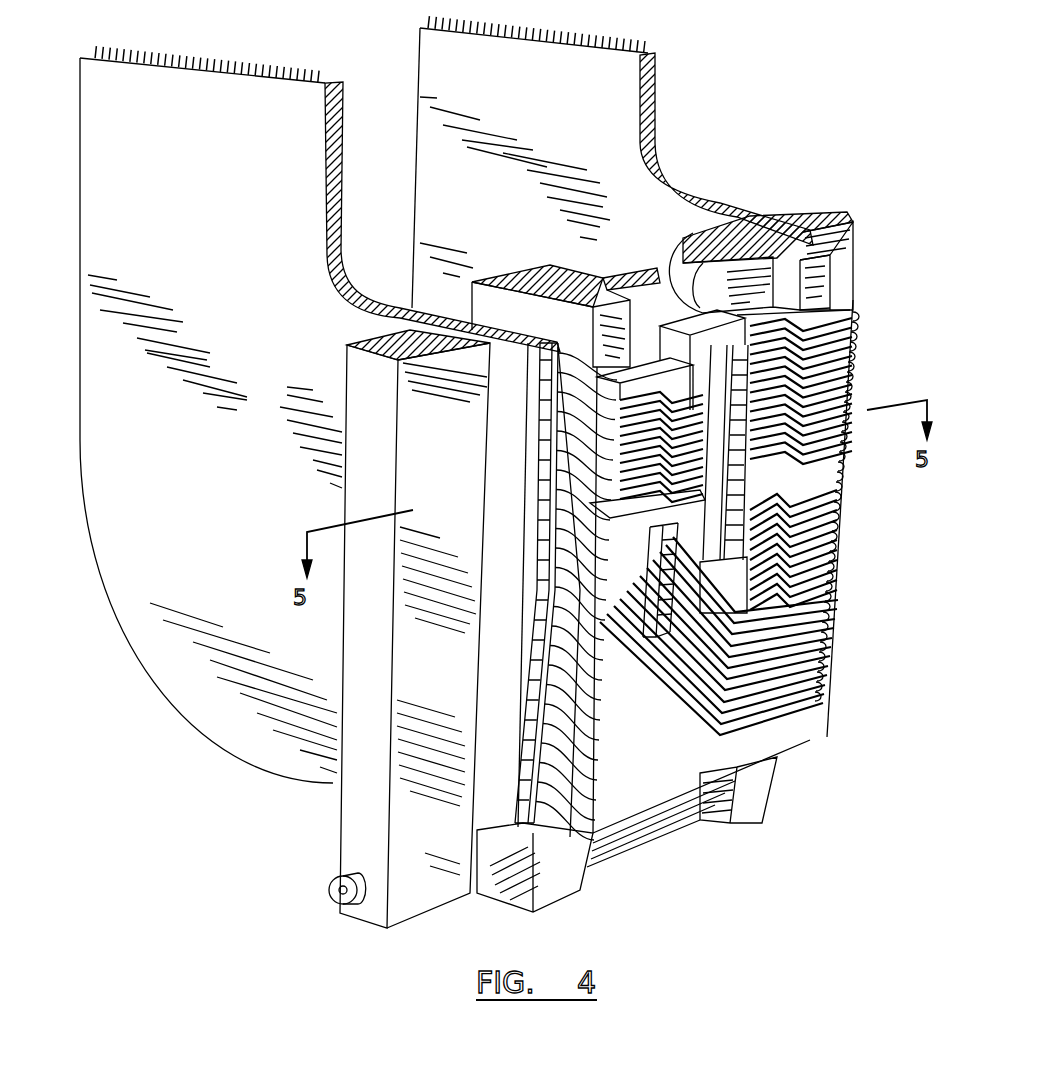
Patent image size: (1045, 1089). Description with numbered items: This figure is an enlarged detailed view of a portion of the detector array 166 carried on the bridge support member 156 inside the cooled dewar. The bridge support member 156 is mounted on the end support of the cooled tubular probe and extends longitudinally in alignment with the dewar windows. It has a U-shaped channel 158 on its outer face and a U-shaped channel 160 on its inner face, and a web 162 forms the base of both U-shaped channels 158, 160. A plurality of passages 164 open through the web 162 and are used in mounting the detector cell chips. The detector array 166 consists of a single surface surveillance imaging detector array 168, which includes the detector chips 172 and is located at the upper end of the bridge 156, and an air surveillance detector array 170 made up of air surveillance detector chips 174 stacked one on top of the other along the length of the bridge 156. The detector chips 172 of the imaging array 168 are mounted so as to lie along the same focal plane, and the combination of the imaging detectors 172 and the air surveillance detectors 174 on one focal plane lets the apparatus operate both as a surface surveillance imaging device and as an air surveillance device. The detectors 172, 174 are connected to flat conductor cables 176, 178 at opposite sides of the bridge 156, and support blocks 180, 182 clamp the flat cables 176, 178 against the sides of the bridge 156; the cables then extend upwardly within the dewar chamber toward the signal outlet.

The bridge support member 156 is at (533, 290).
The U-shaped channel 158 is at (785, 285).
The U-shaped channel 160 is at (693, 243).
The web 162 is at (627, 279).
The passages 164 is at (680, 285).
The detector array 166 is at (890, 335).
The surface surveillance (imaging) detector array 168 is at (643, 787).
The air surveillance detector array 170 is at (843, 508).
The detector chips 172 is at (665, 637).
The air surveillance detector chips 174 is at (733, 337).
The flat conductor cable 176 is at (307, 208).
The flat conductor cable 178 is at (623, 132).
The support block 180 is at (350, 817).
The support block 182 is at (813, 723).